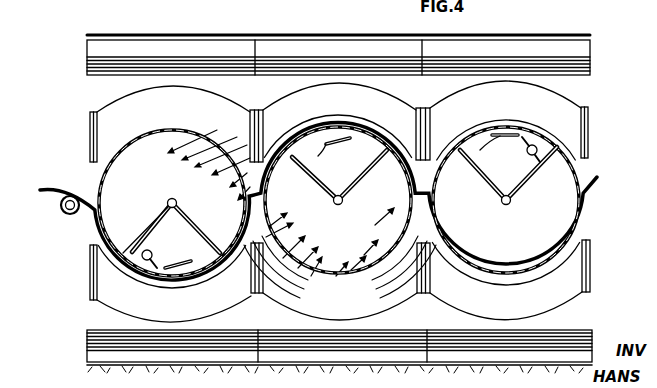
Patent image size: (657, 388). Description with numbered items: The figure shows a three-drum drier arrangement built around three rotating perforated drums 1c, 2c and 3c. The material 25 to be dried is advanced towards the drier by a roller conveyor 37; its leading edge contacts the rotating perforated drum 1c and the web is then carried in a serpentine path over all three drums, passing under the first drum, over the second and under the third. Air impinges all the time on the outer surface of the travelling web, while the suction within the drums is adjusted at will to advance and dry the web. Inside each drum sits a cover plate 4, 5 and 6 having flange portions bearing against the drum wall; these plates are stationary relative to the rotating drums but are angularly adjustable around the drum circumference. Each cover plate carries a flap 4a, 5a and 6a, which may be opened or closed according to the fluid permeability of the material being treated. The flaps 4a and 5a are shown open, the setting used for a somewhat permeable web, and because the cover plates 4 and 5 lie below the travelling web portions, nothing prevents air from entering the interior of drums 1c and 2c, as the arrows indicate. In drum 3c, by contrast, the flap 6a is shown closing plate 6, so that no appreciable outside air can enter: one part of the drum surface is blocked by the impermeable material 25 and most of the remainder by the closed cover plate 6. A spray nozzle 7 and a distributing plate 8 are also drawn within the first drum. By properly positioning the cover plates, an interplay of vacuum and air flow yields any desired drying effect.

The material 25 is at (62, 190).
The roller conveyor 37 is at (61, 227).
The cover plate 4 is at (113, 236).
The flap 4a is at (152, 270).
The perforated drum 1c is at (166, 192).
The spray nozzle 7 is at (166, 286).
The distributing plate 8 is at (198, 252).
The cover plate 5 is at (398, 165).
The flap 5a is at (292, 168).
The perforated drum 2c is at (334, 171).
The cover plate 6 is at (568, 163).
The flap 6a is at (480, 150).
The perforated drum 3c is at (510, 170).